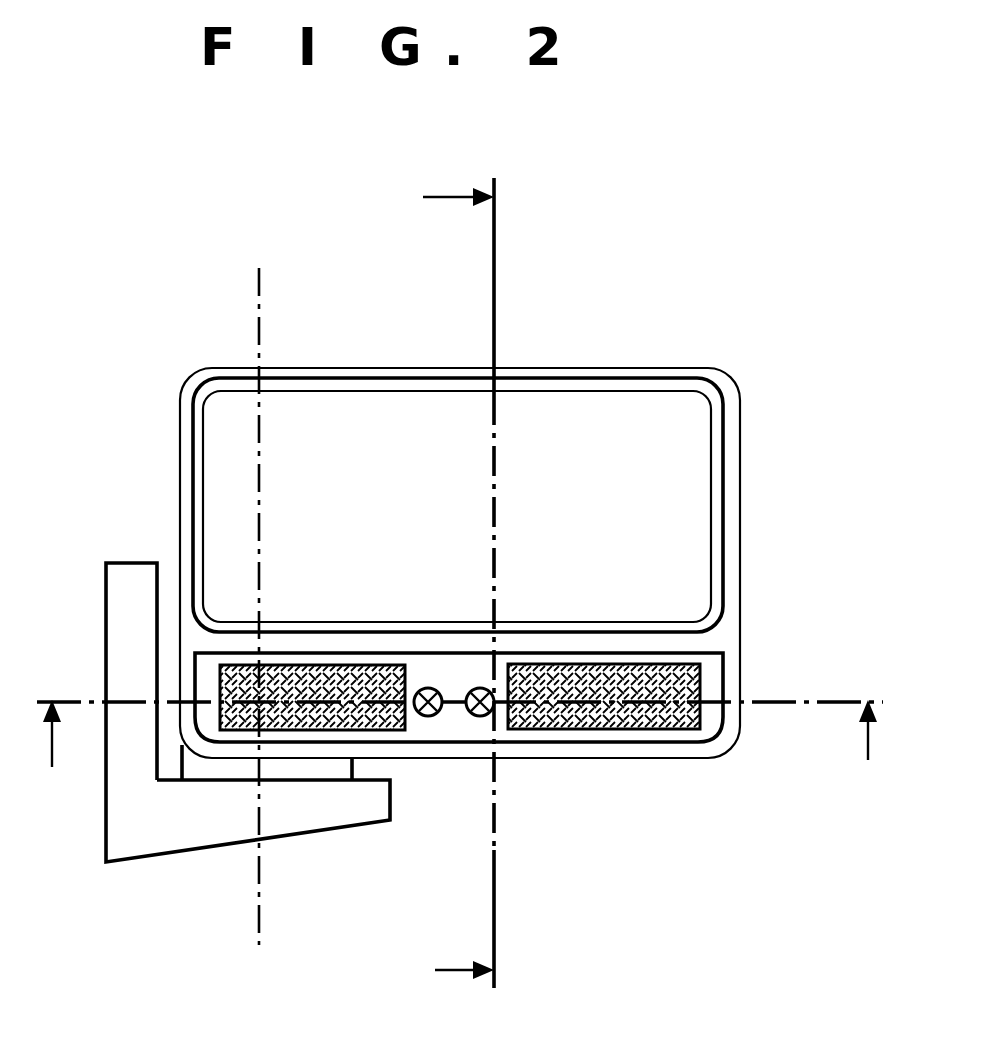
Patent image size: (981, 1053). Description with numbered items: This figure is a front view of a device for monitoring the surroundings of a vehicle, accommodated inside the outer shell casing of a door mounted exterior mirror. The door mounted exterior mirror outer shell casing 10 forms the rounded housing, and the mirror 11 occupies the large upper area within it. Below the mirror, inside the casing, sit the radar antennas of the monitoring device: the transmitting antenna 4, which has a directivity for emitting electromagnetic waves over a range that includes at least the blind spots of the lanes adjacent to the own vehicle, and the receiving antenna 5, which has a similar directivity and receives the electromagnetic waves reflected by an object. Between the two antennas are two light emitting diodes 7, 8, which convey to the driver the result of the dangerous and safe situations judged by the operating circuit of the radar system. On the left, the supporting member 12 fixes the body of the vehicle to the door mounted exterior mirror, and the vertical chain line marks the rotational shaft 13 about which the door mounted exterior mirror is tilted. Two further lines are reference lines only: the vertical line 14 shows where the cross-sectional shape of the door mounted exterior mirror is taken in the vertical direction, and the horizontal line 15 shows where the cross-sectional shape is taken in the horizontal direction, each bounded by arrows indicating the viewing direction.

The transmitting antenna 4 is at (625, 730).
The receiving antenna 5 is at (390, 732).
The light emitting diode 7 is at (482, 716).
The light emitting diode 8 is at (428, 717).
The door mounted exterior mirror outer shell casing 10 is at (310, 368).
The mirror 11 is at (420, 420).
The supporting member 12 is at (160, 863).
The rotational shaft 13 is at (262, 886).
The line 14 is at (495, 878).
The line 15 is at (813, 703).